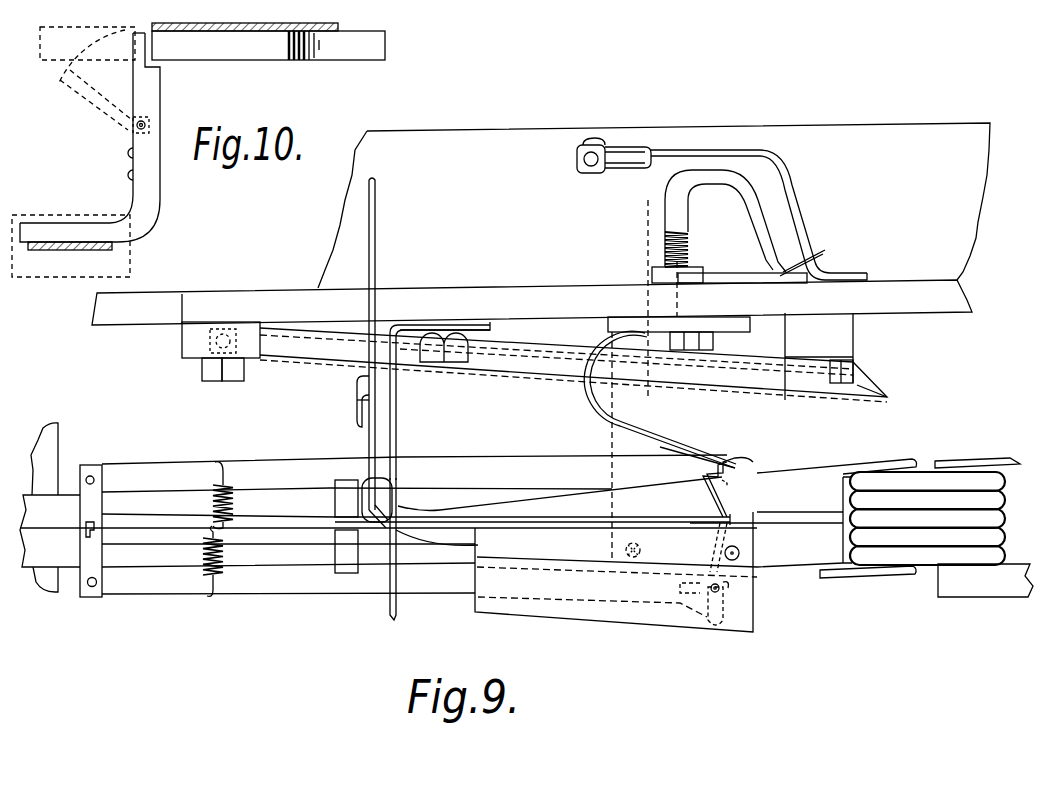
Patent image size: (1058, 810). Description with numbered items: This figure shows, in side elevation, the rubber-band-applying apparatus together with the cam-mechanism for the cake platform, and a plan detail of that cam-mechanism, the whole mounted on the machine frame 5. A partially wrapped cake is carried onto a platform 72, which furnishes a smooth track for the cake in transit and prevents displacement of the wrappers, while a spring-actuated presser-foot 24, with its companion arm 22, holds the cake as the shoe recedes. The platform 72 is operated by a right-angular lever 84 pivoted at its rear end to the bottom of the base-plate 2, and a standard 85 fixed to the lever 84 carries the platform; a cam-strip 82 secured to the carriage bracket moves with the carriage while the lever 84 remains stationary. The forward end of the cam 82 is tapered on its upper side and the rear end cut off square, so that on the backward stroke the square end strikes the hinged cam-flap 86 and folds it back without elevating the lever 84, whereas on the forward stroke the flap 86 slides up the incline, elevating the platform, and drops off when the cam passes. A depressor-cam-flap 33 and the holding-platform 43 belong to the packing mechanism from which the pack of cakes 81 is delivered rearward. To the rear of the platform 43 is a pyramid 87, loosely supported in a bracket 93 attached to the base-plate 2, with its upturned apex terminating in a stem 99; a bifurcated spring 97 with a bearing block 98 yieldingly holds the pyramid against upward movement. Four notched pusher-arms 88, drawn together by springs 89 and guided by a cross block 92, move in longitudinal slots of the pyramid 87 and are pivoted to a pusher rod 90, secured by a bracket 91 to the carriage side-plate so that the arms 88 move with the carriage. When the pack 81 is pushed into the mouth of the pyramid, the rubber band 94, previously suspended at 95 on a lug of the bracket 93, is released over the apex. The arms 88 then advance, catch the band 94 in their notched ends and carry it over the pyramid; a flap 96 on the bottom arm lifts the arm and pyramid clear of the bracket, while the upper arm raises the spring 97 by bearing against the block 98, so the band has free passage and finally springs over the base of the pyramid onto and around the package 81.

In FIG. 9, the base-plate 2 is at (140, 319).
In FIG. 9, the frame 5 is at (470, 143).
In FIG. 9, the lever arm 22 is at (795, 183).
In FIG. 9, the presser-foot 24 is at (742, 168).
In FIG. 10, the depressor-cam-flap 33 is at (242, 27).
In FIG. 9, the holding-platform 43 is at (985, 580).
In FIG. 9, the platform 72 is at (722, 280).
In FIG. 9, the pack of cakes 81 is at (1003, 510).
In FIG. 10, the cam-strip 82 is at (268, 45).
In FIG. 9, the cam-strip 82 is at (866, 392).
In FIG. 10, the right-angular lever 84 is at (71, 246).
In FIG. 9, the right-angular lever 84 is at (573, 365).
In FIG. 10, the standard 85 is at (62, 250).
In FIG. 10, the hinged cam-flap 86 is at (140, 62).
In FIG. 9, the pyramid 87 is at (766, 539).
In FIG. 9, the pusher-arms 88 is at (280, 526).
In FIG. 9, the springs 89 is at (232, 490).
In FIG. 9, the pusher rod 90 is at (61, 531).
In FIG. 9, the bracket 91 is at (44, 459).
In FIG. 9, the cross block 92 is at (346, 526).
In FIG. 9, the bracket 93 is at (616, 572).
In FIG. 9, the rubber band 94 is at (722, 493).
In FIG. 9, the suspended rubber band position 95 is at (370, 478).
In FIG. 9, the flap 96 is at (715, 627).
In FIG. 9, the spring 97 is at (598, 401).
In FIG. 9, the bearing block 98 is at (672, 456).
In FIG. 9, the stem 99 is at (376, 250).